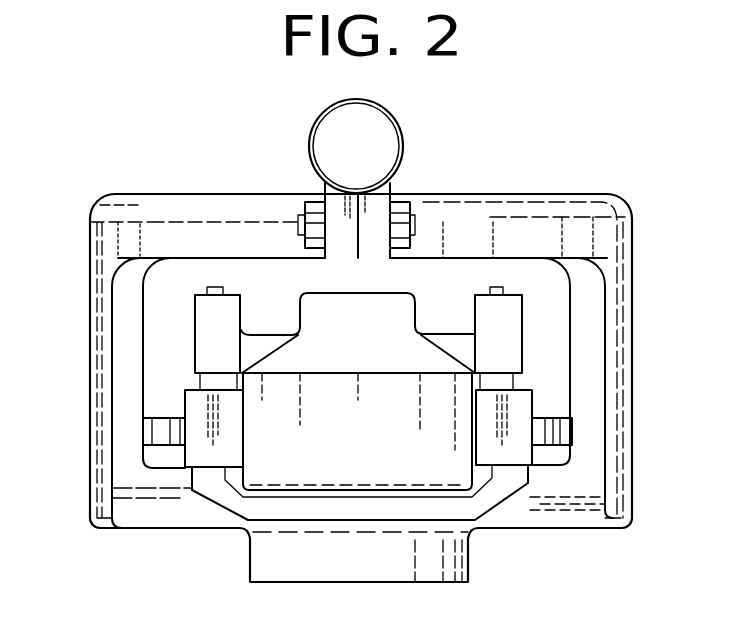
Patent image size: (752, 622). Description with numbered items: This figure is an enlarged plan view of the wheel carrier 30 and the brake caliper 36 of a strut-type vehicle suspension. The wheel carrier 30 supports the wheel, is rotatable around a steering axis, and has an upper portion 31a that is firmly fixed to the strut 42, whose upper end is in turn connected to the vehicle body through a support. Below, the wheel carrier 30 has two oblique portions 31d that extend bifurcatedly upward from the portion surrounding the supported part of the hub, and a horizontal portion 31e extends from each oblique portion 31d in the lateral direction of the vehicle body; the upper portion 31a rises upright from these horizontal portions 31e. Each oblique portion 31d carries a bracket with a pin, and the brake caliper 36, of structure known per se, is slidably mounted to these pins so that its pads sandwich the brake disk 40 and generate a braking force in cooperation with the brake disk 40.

The wheel carrier 30 is at (512, 192).
The upper portion 31a is at (455, 208).
The oblique portions 31d is at (163, 512).
The horizontal portion 31e is at (130, 336).
The brake caliper 36 is at (320, 387).
The brake disk 40 is at (547, 415).
The strut 42 is at (404, 140).